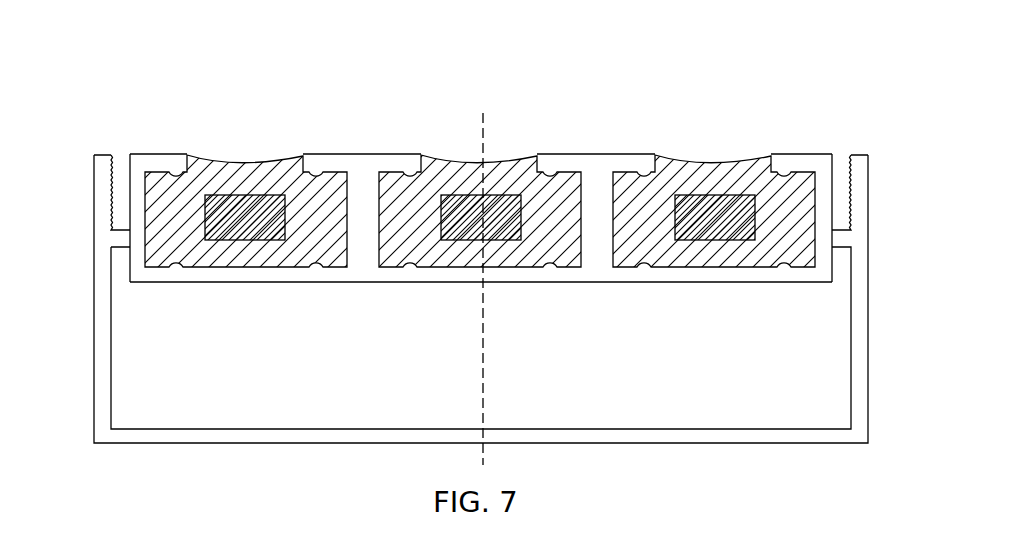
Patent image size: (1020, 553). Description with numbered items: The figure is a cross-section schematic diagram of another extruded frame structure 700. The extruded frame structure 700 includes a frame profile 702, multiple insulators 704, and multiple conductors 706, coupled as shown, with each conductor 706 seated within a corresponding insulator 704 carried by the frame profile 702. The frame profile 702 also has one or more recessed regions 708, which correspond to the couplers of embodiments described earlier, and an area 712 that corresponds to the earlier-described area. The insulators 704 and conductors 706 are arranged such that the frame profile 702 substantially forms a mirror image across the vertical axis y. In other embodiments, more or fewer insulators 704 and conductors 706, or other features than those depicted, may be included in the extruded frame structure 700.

The extruded frame structure 700 is at (752, 56).
The frame profile 702 is at (98, 393).
The insulators 704 is at (455, 157).
The conductors 706 is at (722, 205).
The recessed regions 708 is at (128, 190).
The area 712 is at (455, 365).